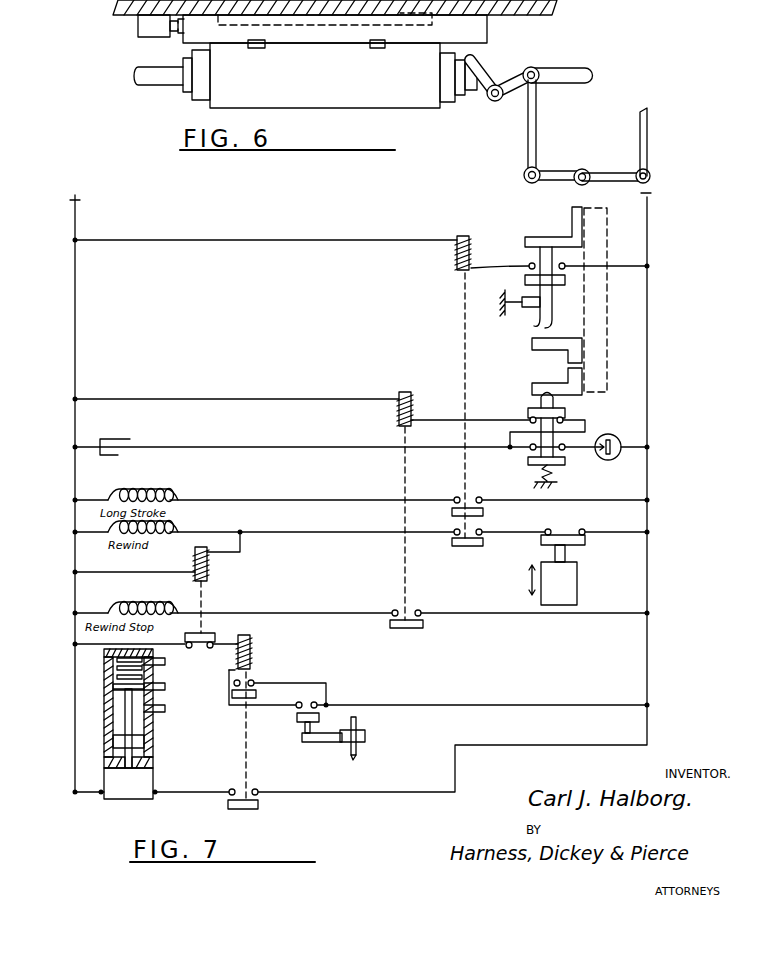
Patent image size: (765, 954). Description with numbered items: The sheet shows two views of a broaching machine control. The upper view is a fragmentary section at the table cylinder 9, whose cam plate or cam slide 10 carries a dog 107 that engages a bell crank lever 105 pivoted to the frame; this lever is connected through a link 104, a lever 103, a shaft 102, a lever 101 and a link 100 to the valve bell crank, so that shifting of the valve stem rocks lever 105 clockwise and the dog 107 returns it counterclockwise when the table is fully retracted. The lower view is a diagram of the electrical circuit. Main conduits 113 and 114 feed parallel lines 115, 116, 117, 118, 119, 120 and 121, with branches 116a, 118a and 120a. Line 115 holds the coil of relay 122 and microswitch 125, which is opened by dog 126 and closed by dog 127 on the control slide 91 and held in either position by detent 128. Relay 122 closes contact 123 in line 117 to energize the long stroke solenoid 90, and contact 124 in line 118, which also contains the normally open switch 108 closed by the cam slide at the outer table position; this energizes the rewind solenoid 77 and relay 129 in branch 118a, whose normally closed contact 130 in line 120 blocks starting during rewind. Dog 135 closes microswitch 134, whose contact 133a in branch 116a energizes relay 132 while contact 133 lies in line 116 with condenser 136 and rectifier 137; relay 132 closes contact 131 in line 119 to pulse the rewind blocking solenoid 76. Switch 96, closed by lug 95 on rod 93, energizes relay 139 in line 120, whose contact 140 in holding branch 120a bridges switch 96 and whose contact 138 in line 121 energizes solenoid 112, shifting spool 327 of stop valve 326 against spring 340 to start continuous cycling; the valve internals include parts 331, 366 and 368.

In FIG. 6, the reciprocating cylinder 9 is at (410, 96).
In FIG. 6, the cam plate 10 is at (335, 37).
In FIG. 6, the link 100 is at (648, 140).
In FIG. 6, the lever 101 is at (611, 174).
In FIG. 6, the shaft 102 is at (578, 184).
In FIG. 6, the lever 103 is at (553, 171).
In FIG. 6, the link 104 is at (537, 130).
In FIG. 6, the bell crank lever 105 is at (483, 98).
In FIG. 6, the dog 107 is at (482, 58).
In FIG. 6, the normally open switch 108 is at (138, 28).
In FIG. 7, the normally open switch 108 is at (585, 542).
In FIG. 7, the main electrical conduit 113 is at (73, 226).
In FIG. 7, the main electrical conduit 114 is at (648, 218).
In FIG. 7, the line 115 is at (313, 240).
In FIG. 7, the line 116 is at (292, 447).
In FIG. 7, the branch line 116a is at (265, 399).
In FIG. 7, the line 117 is at (305, 500).
In FIG. 7, the line 118 is at (310, 532).
In FIG. 7, the branch line 118a is at (240, 552).
In FIG. 7, the line 119 is at (315, 613).
In FIG. 7, the line 120 is at (466, 705).
In FIG. 7, the branch line 120a is at (280, 683).
In FIG. 7, the line 121 is at (455, 786).
In FIG. 7, the relay 122 is at (462, 233).
In FIG. 7, the normally open contact 123 is at (483, 511).
In FIG. 7, the normally open contact 124 is at (475, 546).
In FIG. 7, the microswitch 125 is at (525, 278).
In FIG. 7, the dog 126 is at (544, 237).
In FIG. 7, the dog 127 is at (532, 341).
In FIG. 7, the detent 128 is at (528, 310).
In FIG. 7, the relay 129 is at (208, 576).
In FIG. 7, the normally closed contact 130 is at (212, 633).
In FIG. 7, the normally open contact 131 is at (423, 626).
In FIG. 7, the relay 132 is at (405, 392).
In FIG. 7, the normally closed contact 133 is at (528, 462).
In FIG. 7, the normally open contact 133a is at (530, 410).
In FIG. 7, the microswitch 134 is at (525, 428).
In FIG. 7, the dog 135 is at (532, 386).
In FIG. 7, the condenser 136 is at (108, 439).
In FIG. 7, the rectifier 137 is at (618, 428).
In FIG. 7, the normally open contact 138 is at (258, 805).
In FIG. 7, the relay 139 is at (252, 652).
In FIG. 7, the normally open contact 140 is at (232, 696).
In FIG. 7, the rewind blocking solenoid 76 is at (145, 606).
In FIG. 7, the rewind solenoid 77 is at (170, 529).
In FIG. 7, the solenoid 90 is at (166, 495).
In FIG. 7, the control slide 91 is at (603, 298).
In FIG. 7, the rod 93 is at (358, 755).
In FIG. 7, the lug 95 is at (308, 742).
In FIG. 7, the switch 96 is at (625, 266).
In FIG. 7, the solenoid 112 is at (130, 797).
In FIG. 7, the stop valve 326 is at (113, 742).
In FIG. 7, the spool 327 is at (125, 717).
In FIG. 7, the contact plates 331 is at (162, 664).
In FIG. 7, the spring 340 is at (104, 665).
In FIG. 7, the contact 366 is at (163, 712).
In FIG. 7, the contact plate 368 is at (162, 688).